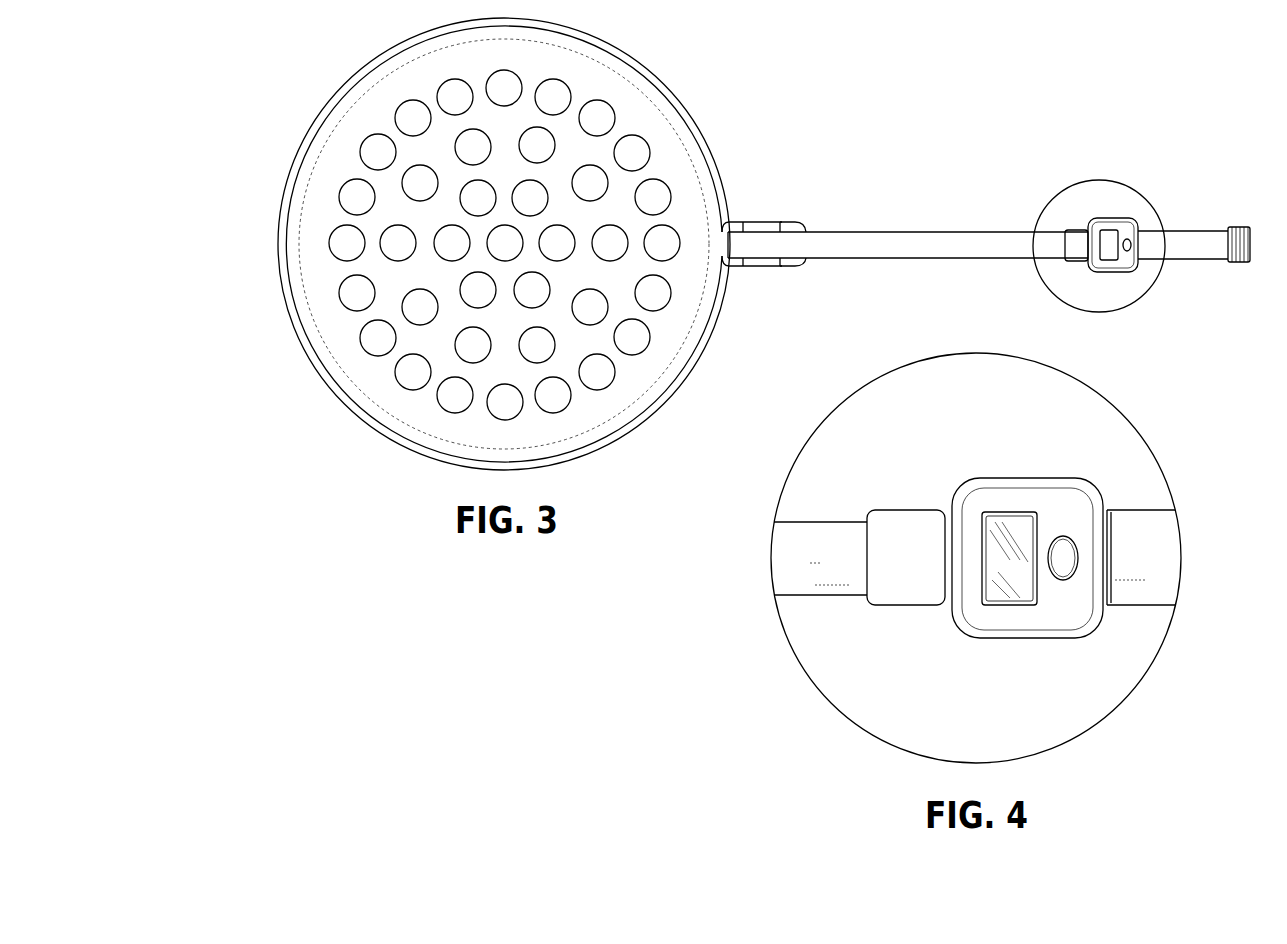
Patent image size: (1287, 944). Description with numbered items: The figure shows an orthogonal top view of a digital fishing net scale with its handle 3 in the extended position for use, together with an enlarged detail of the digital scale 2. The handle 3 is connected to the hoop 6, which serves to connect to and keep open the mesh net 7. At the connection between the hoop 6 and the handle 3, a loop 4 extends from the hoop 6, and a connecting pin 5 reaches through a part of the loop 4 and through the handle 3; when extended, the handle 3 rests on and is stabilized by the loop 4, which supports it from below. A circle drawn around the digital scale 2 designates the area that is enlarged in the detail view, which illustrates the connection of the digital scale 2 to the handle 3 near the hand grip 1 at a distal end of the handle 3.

In FIG. 3, the hand grip 1 is at (1192, 230).
In FIG. 4, the hand grip 1 is at (1140, 510).
In FIG. 3, the digital scale 2 is at (1113, 218).
In FIG. 4, the digital scale 2 is at (1025, 478).
In FIG. 3, the handle 3 is at (888, 232).
In FIG. 4, the handle 3 is at (820, 522).
In FIG. 3, the loop 4 is at (792, 265).
In FIG. 3, the connecting pin 5 is at (748, 268).
In FIG. 3, the hoop 6 is at (350, 77).
In FIG. 3, the mesh net 7 is at (632, 117).